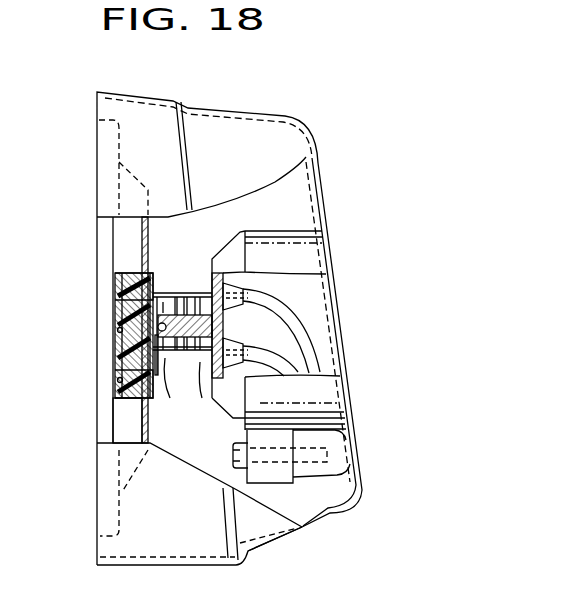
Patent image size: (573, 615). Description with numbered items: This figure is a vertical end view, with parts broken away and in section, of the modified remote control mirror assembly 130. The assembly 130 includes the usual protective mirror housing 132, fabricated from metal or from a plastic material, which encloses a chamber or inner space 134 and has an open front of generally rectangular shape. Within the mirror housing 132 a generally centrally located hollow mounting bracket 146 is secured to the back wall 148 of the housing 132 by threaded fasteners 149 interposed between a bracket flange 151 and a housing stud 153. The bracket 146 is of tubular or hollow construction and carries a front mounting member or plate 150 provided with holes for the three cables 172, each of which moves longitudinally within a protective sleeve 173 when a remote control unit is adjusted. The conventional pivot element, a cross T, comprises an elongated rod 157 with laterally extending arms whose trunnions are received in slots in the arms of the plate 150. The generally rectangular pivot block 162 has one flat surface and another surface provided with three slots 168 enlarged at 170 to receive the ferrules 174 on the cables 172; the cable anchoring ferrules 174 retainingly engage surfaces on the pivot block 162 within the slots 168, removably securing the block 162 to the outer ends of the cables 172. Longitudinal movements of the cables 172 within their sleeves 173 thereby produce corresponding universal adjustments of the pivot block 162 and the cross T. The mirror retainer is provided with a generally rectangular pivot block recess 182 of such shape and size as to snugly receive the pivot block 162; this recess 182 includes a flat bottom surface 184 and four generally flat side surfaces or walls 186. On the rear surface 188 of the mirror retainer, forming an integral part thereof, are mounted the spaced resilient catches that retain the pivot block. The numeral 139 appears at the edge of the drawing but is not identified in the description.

The modified remote control mirror assembly 130 is at (247, 103).
The mirror housing 132 is at (300, 120).
The chamber or inner space 134 is at (302, 207).
The housing 139 is at (436, 5).
The hollow mounting bracket 146 is at (308, 252).
The back wall 148 is at (337, 378).
The threaded fasteners 149 is at (280, 466).
The front mounting member or plate 150 is at (209, 277).
The bracket flange 151 is at (265, 478).
The housing stud 153 is at (342, 468).
The elongated rod 157 is at (178, 363).
The pivot block 162 is at (130, 343).
The slots 168 is at (155, 282).
The enlarged slot portions 170 is at (115, 290).
The cables 172 is at (224, 331).
The protective sleeves 173 is at (308, 316).
The ferrules 174 is at (115, 300).
The pivot block recess 182 is at (118, 327).
The flat bottom surface 184 is at (120, 378).
The side surfaces or walls 186 is at (118, 388).
The rear surface 188 is at (150, 233).